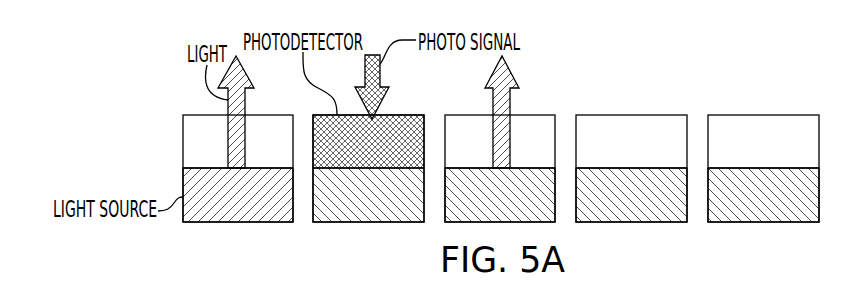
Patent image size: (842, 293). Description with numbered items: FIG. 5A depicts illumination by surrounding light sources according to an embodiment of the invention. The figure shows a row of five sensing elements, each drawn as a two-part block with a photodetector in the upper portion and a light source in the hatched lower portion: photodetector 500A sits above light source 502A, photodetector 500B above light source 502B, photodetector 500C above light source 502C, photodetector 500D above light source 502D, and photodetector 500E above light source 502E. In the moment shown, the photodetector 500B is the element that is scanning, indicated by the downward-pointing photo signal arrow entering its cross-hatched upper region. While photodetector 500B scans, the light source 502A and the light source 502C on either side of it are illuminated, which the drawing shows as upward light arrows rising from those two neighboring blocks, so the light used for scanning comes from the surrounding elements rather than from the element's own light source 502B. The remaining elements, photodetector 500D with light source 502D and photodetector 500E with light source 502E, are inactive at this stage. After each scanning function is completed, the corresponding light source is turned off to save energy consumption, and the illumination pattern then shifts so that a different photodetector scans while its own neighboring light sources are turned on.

The photodetector 500A is at (183, 143).
The photodetector 500B is at (400, 152).
The photodetector 500C is at (463, 115).
The photodetector 500D is at (665, 152).
The photodetector 500E is at (793, 152).
The light source 502A is at (268, 206).
The light source 502B is at (400, 207).
The light source 502C is at (527, 207).
The light source 502D is at (665, 207).
The light source 502E is at (793, 207).